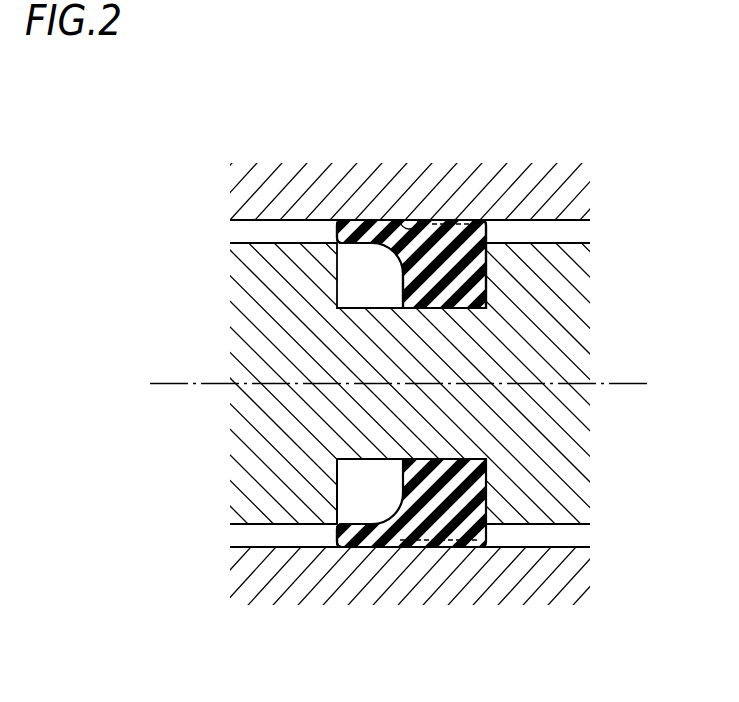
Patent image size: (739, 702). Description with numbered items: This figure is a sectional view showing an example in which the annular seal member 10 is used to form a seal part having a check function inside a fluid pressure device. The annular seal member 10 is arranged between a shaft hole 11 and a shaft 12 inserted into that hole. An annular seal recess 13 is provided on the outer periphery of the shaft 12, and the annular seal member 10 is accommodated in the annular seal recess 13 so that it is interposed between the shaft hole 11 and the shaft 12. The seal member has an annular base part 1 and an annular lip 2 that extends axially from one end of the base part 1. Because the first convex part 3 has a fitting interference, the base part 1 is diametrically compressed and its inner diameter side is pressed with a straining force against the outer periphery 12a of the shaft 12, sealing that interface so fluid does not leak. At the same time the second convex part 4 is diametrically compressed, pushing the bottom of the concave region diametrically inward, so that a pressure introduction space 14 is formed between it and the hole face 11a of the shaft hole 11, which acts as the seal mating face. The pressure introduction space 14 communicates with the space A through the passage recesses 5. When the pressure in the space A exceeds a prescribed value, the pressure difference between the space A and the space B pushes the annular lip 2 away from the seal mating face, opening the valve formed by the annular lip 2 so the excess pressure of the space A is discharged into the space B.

The base part 1 is at (478, 275).
The annular lip 2 is at (370, 218).
The first convex part 3 is at (452, 212).
The second convex part 4 is at (423, 216).
The passage recesses 5 is at (460, 212).
The annular seal member 10 is at (492, 542).
The shaft hole 11 is at (547, 237).
The hole face 11a is at (563, 223).
The shaft 12 is at (257, 306).
The outer periphery of the shaft 12a is at (257, 245).
The annular seal recess 13 is at (347, 460).
The pressure introduction space 14 is at (403, 547).
The space A is at (522, 222).
The space B is at (263, 225).